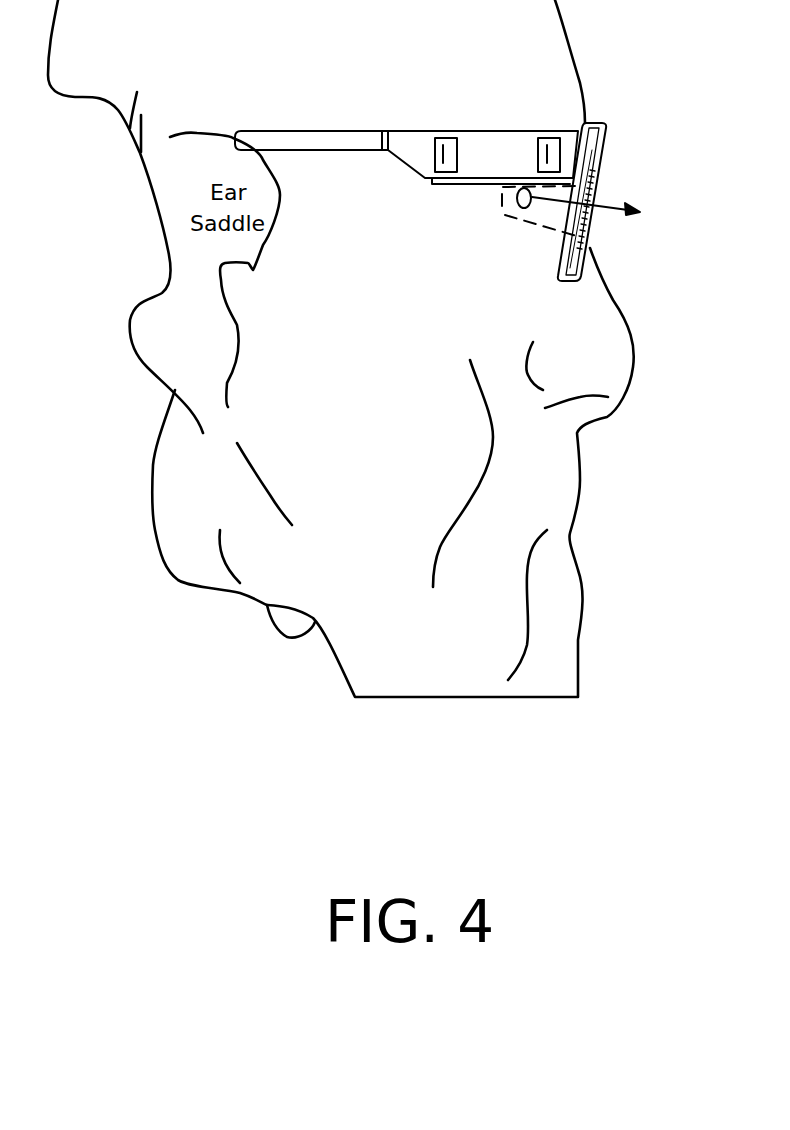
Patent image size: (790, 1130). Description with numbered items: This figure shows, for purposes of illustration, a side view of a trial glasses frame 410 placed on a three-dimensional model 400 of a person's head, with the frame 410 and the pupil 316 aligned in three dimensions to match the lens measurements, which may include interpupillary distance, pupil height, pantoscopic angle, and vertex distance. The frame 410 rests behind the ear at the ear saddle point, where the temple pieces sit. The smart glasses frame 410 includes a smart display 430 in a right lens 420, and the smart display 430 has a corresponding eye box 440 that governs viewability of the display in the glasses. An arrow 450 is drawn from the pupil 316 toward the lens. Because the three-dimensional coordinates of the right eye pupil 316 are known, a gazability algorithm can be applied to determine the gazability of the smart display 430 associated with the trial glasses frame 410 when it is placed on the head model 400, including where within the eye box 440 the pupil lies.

The 3-D model of a person's head 400 is at (400, 490).
The trial glasses frame 410 is at (487, 128).
The right lens 420 is at (607, 122).
The smart display 430 is at (598, 168).
The eye box 440 is at (498, 214).
The field of view direction 450 is at (611, 207).
The pupil 316 is at (525, 209).